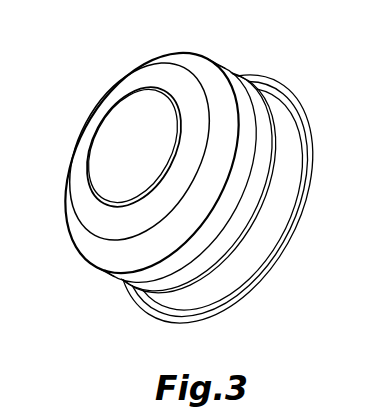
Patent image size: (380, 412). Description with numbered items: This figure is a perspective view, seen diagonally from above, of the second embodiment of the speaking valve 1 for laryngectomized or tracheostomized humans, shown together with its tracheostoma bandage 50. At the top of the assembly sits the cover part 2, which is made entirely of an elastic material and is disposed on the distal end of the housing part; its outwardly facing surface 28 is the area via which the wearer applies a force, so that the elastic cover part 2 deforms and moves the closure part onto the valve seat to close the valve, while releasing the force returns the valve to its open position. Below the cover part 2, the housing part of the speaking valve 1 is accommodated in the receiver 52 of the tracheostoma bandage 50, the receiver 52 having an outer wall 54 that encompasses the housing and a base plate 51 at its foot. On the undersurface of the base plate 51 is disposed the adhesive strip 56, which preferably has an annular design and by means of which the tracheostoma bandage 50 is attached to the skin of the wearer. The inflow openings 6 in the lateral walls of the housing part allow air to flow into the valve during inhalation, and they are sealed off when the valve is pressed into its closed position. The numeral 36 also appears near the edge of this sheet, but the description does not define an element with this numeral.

The speaking valve 1 is at (323, 55).
The cover part 2 is at (104, 94).
The surface 28 is at (87, 213).
The tracheostoma bandage 50 is at (286, 131).
The base plate 51 is at (278, 105).
The receiver 52 is at (255, 206).
The outer wall 54 is at (237, 229).
The adhesive strip 56 is at (302, 103).
The housing (adjacent figure) 36 is at (366, 315).
The inflow openings 6 is at (379, 401).